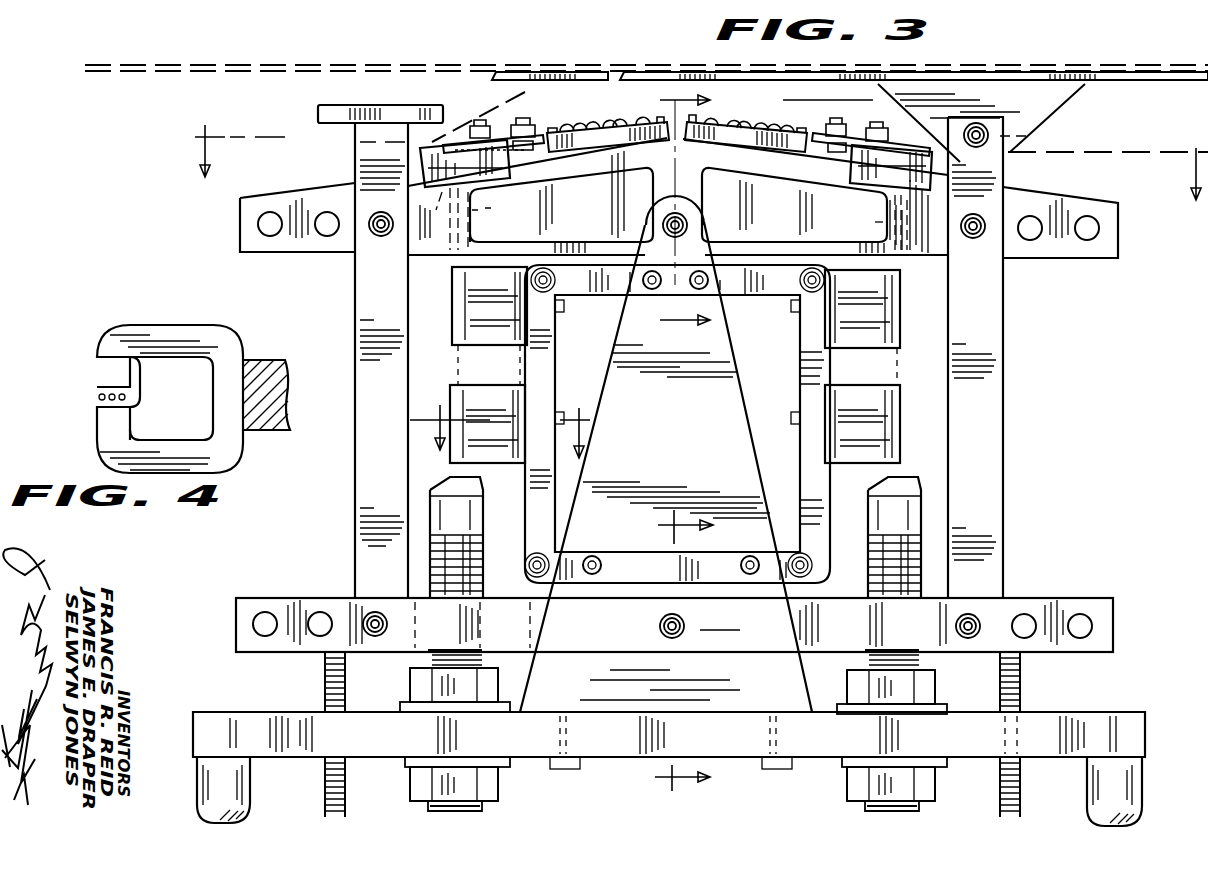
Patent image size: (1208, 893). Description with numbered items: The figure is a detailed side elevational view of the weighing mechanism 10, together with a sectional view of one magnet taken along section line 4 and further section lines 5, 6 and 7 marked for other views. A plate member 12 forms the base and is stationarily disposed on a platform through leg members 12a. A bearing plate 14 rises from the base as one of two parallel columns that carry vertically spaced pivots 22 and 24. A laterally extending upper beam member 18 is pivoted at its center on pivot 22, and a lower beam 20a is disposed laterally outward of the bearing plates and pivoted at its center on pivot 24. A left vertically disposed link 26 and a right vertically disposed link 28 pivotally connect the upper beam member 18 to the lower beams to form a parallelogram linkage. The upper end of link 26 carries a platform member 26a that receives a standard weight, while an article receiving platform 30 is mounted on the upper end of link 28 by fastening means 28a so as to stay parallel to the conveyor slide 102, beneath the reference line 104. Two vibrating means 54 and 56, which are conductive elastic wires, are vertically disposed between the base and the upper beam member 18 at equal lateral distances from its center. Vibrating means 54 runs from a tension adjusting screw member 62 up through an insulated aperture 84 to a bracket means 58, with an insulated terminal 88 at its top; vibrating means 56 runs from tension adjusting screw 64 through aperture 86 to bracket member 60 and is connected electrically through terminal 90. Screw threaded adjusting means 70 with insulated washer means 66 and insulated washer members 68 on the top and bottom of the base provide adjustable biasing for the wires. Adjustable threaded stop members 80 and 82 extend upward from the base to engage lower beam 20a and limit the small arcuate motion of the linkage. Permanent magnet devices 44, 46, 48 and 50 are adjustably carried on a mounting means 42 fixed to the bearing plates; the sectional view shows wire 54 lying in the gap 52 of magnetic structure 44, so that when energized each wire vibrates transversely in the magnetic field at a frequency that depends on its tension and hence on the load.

In FIG. 3, the apparatus 10 is at (200, 212).
In FIG. 3, the plate member 12 is at (1136, 729).
In FIG. 3, the leg members 12a is at (210, 787).
In FIG. 3, the bearing plate 14 is at (681, 451).
In FIG. 3, the upper beam member 18 is at (1032, 250).
In FIG. 3, the lower beam 20a is at (1030, 600).
In FIG. 3, the pivot 22 is at (656, 226).
In FIG. 3, the pivot 24 is at (685, 622).
In FIG. 3, the left vertically disposed link 26 is at (360, 485).
In FIG. 3, the platform member 26a is at (318, 111).
In FIG. 3, the right vertically disposed link 28 is at (990, 488).
In FIG. 3, the fastening means 28a is at (1018, 138).
In FIG. 3, the article receiving platform 30 is at (1053, 120).
In FIG. 3, the mounting means 42 is at (560, 348).
In FIG. 3, the permanent magnet device 44 is at (453, 286).
In FIG. 4, the permanent magnet device 44 is at (128, 334).
In FIG. 3, the permanent magnet device 46 is at (497, 458).
In FIG. 3, the permanent magnet device 48 is at (900, 307).
In FIG. 3, the permanent magnet device 50 is at (900, 402).
In FIG. 4, the gap 52 is at (98, 396).
In FIG. 3, the vibrating means 54 is at (458, 368).
In FIG. 4, the vibrating means 54 is at (128, 394).
In FIG. 3, the vibrating means 56 is at (895, 370).
In FIG. 3, the bracket means 58 is at (462, 195).
In FIG. 3, the bracket member 60 is at (855, 163).
In FIG. 3, the tension adjusting screw member 62 is at (470, 512).
In FIG. 3, the tension adjusting screw 64 is at (880, 512).
In FIG. 3, the insulated washer means 66 is at (510, 692).
In FIG. 3, the insulated washer members 68 is at (945, 710).
In FIG. 3, the screw threaded adjusting means 70 is at (410, 690).
In FIG. 3, the adjustable threaded stop member 80 is at (324, 688).
In FIG. 3, the adjustable threaded stop member 82 is at (1020, 700).
In FIG. 3, the insulated aperture 84 is at (470, 206).
In FIG. 3, the aperture 86 is at (890, 226).
In FIG. 3, the insulated terminal 88 is at (470, 135).
In FIG. 3, the terminal 90 is at (878, 122).
In FIG. 3, the conveyor slide 102 is at (598, 72).
In FIG. 3, the reference plane 104 is at (242, 67).
In FIG. 3, the section line 4— 4 is at (502, 416).
In FIG. 3, the section indicator 5 is at (701, 149).
In FIG. 3, the section indicator 6 is at (754, 210).
In FIG. 3, the section indicator 7 is at (662, 652).